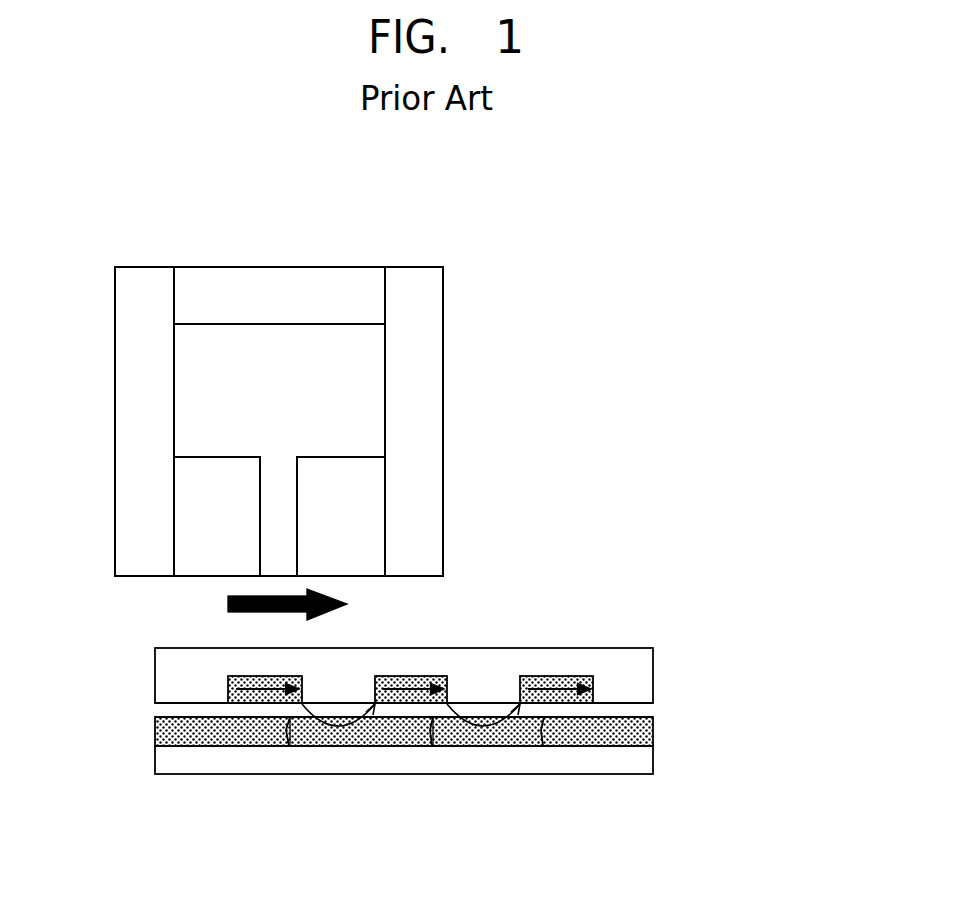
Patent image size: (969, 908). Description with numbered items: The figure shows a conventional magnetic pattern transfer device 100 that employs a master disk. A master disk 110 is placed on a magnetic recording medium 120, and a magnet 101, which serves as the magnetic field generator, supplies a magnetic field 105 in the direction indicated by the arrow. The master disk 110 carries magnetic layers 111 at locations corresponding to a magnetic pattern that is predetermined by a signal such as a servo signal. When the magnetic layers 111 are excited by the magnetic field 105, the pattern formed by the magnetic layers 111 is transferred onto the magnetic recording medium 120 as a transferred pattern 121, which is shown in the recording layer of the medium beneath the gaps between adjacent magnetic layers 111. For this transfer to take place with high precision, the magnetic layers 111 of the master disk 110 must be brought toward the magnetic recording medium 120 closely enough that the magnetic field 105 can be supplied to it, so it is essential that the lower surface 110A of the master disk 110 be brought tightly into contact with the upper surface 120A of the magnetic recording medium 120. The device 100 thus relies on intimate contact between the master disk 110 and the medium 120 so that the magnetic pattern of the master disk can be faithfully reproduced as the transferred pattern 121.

The magnetic pattern transfer device 100 is at (605, 373).
The magnet 101 is at (321, 270).
The magnetic field 105 is at (347, 604).
The master disk 110 is at (660, 648).
The lower surface of the master disk 110A is at (162, 703).
The magnetic layers 111 is at (560, 676).
The magnetic recording medium 120 is at (660, 718).
The upper surface of the magnetic recording medium 120A is at (157, 716).
The transferred pattern 121 is at (355, 746).